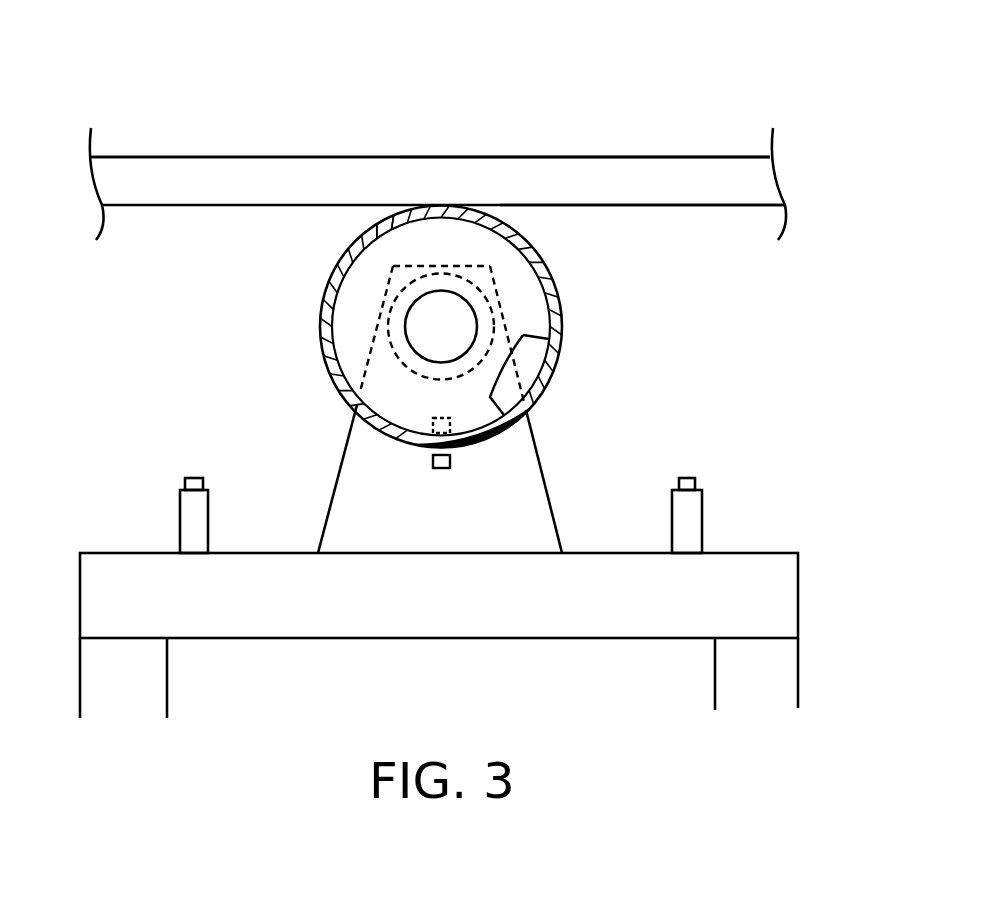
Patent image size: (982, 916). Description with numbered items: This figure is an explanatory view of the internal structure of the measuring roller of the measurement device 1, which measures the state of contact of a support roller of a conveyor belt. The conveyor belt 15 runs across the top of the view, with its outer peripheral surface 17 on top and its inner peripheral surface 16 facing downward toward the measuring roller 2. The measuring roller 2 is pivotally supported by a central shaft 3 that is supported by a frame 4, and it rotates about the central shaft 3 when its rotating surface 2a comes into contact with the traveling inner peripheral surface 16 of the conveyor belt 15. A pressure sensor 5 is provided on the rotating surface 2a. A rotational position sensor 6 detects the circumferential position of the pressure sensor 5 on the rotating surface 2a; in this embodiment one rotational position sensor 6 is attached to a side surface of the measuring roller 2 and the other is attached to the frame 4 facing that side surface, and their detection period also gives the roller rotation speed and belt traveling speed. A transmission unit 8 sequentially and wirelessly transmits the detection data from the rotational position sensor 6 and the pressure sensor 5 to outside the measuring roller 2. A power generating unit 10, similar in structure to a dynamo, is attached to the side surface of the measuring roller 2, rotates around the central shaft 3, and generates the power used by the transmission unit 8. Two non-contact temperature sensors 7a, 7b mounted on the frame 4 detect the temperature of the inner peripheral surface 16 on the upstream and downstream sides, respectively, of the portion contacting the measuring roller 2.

The measurement device 1 is at (483, 151).
The conveyor belt 15 is at (240, 164).
The outer peripheral surface 17 is at (614, 157).
The inner peripheral surface 16 is at (672, 206).
The measuring roller 2 is at (325, 287).
The rotating surface 2a is at (320, 358).
The pressure sensor 5 is at (381, 220).
The central shaft 3 is at (462, 316).
The power generating unit 10 is at (410, 366).
The transmission unit 8 is at (530, 372).
The rotational position sensor 6 is at (452, 424).
The frame 4 is at (580, 568).
The temperature sensor 7a is at (185, 515).
The temperature sensor 7b is at (695, 512).